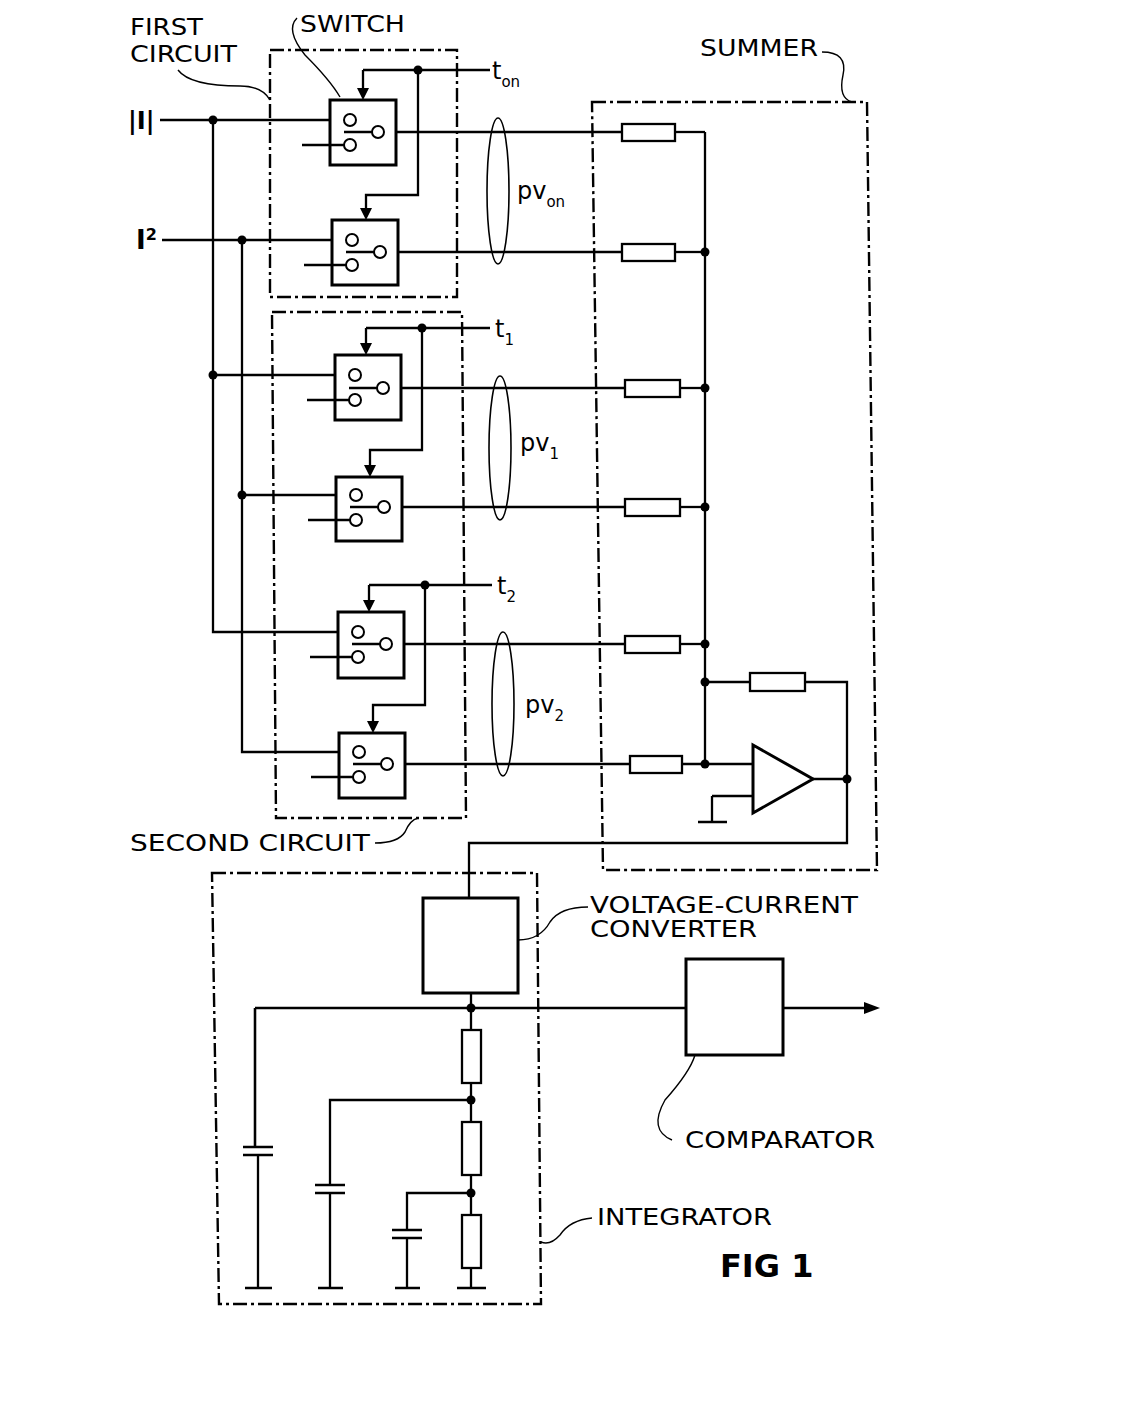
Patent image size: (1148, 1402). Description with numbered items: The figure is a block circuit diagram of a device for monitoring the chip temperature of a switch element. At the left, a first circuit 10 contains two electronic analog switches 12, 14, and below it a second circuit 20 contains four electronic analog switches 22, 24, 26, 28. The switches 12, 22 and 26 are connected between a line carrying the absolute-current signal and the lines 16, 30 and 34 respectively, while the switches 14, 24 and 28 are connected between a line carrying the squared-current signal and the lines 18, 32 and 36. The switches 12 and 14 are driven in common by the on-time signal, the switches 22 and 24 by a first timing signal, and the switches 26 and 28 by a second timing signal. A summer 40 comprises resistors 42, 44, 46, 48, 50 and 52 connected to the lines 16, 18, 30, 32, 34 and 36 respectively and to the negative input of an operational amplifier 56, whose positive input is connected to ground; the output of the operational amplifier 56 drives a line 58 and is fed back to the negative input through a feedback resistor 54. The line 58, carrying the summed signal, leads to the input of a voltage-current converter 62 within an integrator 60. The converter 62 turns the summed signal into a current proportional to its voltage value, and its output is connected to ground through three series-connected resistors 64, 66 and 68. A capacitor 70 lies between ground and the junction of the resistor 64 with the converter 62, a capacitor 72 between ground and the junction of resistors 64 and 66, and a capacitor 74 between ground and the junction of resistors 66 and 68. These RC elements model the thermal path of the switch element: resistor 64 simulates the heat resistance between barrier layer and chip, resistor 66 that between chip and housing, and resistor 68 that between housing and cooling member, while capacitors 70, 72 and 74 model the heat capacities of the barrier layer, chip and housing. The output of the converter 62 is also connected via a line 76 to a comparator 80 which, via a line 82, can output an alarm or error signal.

The first circuit 10 is at (270, 200).
The electronic analog switch 12 is at (350, 165).
The electronic analog switch 14 is at (400, 266).
The line 16 is at (558, 134).
The line 18 is at (546, 254).
The second circuit 20 is at (274, 782).
The electronic analog switch 22 is at (354, 420).
The electronic analog switch 24 is at (402, 527).
The electronic analog switch 26 is at (355, 678).
The electronic analog switch 28 is at (405, 784).
The line 30 is at (566, 387).
The line 32 is at (540, 506).
The line 34 is at (558, 643).
The line 36 is at (571, 763).
The summer 40 is at (870, 396).
The resistor 42 is at (650, 142).
The resistor 44 is at (633, 262).
The resistor 46 is at (665, 379).
The resistor 48 is at (660, 498).
The resistor 50 is at (660, 635).
The resistor 52 is at (660, 755).
The feedback resistor 54 is at (772, 672).
The operational amplifier 56 is at (786, 800).
The line 58 is at (672, 843).
The integrator 60 is at (212, 926).
The voltage-current converter 62 is at (423, 960).
The resistor 64 is at (482, 1040).
The resistor 66 is at (482, 1130).
The resistor 68 is at (482, 1225).
The capacitor 70 is at (266, 1160).
The capacitor 72 is at (338, 1200).
The capacitor 74 is at (410, 1246).
The line 76 is at (586, 1009).
The comparator 80 is at (720, 1055).
The line 82 is at (811, 1009).